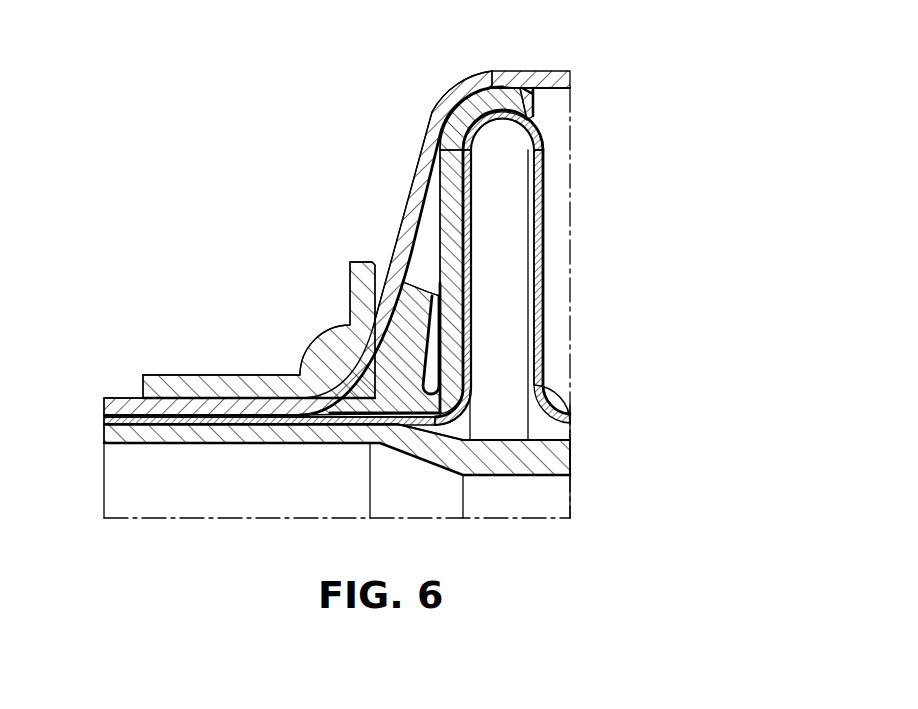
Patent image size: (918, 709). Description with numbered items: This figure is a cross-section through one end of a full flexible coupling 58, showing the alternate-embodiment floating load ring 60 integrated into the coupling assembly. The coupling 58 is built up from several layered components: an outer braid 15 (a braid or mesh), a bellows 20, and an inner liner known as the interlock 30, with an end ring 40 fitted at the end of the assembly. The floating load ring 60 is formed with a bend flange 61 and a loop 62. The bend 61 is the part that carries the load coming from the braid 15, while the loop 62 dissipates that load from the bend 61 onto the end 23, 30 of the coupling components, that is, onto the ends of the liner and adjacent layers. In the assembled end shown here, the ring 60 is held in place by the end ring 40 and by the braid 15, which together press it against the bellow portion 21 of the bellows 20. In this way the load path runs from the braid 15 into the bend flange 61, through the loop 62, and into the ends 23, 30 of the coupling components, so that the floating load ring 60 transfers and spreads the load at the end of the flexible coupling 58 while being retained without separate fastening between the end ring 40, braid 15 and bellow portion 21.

The braid 15 is at (552, 83).
The bellows 20 is at (503, 110).
The bellow portion 21 is at (470, 289).
The end 23 is at (345, 427).
The interlock 30 is at (108, 434).
The end ring 40 is at (205, 385).
The flexible coupling 58 is at (412, 244).
The floating load ring 60 is at (437, 233).
The bend flange 61 is at (470, 112).
The loop 62 is at (377, 368).